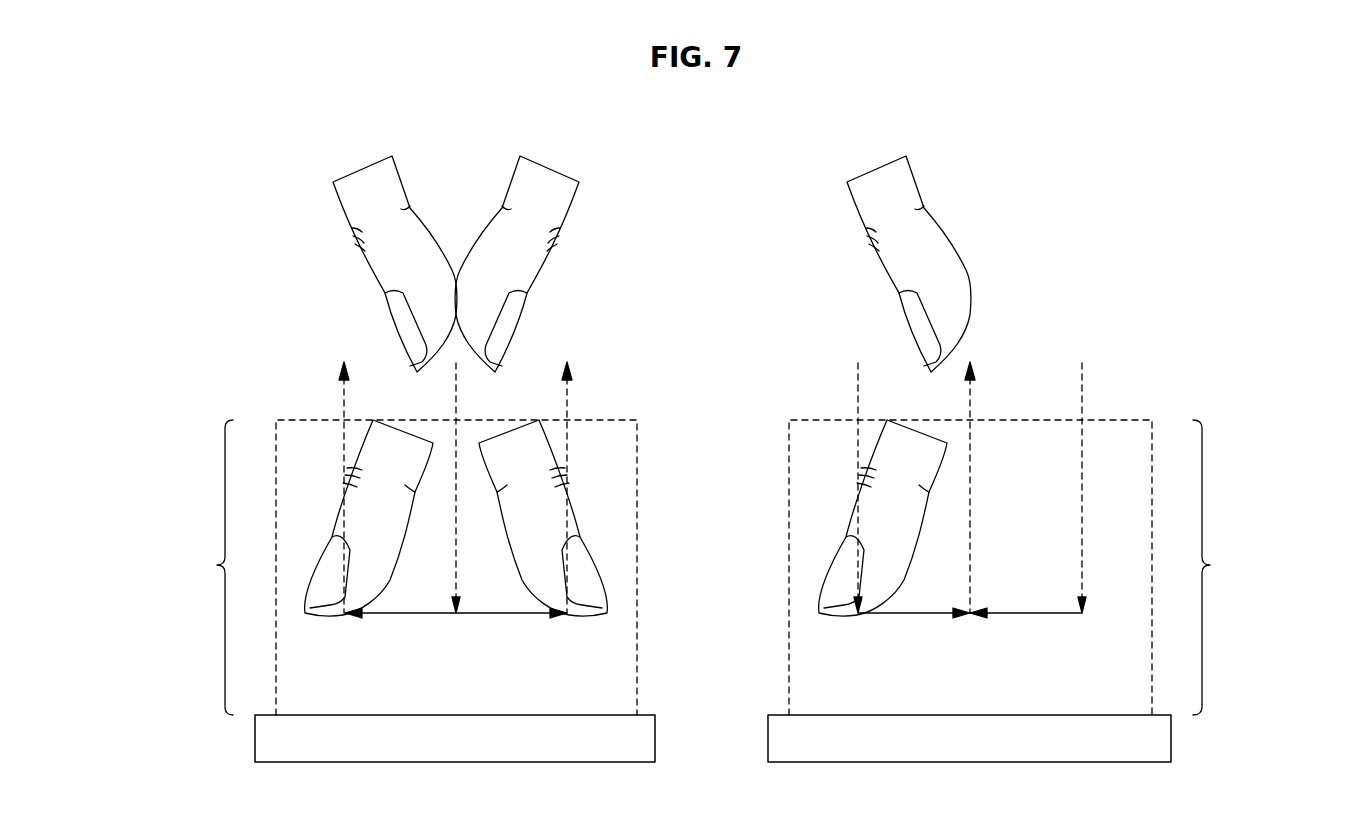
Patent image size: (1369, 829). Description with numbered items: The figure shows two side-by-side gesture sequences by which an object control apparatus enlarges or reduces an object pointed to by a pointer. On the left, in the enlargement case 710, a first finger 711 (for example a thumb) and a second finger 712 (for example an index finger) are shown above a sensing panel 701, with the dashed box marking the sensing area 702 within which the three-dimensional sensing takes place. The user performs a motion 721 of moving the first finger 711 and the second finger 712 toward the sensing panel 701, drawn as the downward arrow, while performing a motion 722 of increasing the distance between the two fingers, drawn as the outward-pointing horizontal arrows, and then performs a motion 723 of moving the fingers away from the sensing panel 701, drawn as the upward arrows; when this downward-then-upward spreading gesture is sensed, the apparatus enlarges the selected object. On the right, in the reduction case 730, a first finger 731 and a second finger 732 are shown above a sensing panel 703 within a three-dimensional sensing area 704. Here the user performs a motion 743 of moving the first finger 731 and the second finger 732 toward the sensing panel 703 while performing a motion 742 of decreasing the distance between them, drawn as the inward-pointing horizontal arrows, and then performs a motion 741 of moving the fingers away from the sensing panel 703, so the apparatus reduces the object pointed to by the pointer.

The sensing panel 701 is at (453, 740).
The sensing area 702 is at (150, 602).
The sensing panel 703 is at (968, 740).
The 3D sensing area 704 is at (1273, 602).
The first gesture state (fingers spreading) 710 is at (428, 116).
The first finger 711 is at (357, 203).
The second finger 712 is at (555, 203).
The motion of moving fingers toward sensing panel 721 is at (456, 557).
The motion of increasing distance between fingers 722 is at (393, 617).
The motion of moving fingers away from sensing panel 723 is at (567, 402).
The second gesture state (fingers pinching) 730 is at (942, 116).
The first finger 731 is at (871, 203).
The second finger 732 is at (1069, 203).
The motion of moving fingers away from sensing panel 741 is at (970, 557).
The motion of decreasing distance between fingers 742 is at (907, 617).
The motion of moving fingers toward sensing panel 743 is at (1081, 402).